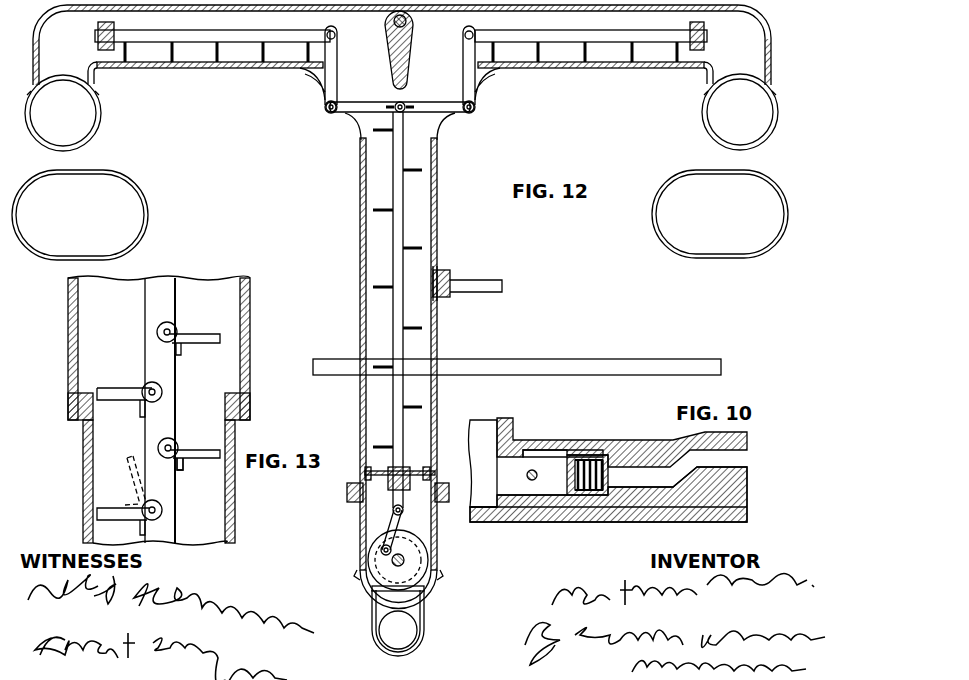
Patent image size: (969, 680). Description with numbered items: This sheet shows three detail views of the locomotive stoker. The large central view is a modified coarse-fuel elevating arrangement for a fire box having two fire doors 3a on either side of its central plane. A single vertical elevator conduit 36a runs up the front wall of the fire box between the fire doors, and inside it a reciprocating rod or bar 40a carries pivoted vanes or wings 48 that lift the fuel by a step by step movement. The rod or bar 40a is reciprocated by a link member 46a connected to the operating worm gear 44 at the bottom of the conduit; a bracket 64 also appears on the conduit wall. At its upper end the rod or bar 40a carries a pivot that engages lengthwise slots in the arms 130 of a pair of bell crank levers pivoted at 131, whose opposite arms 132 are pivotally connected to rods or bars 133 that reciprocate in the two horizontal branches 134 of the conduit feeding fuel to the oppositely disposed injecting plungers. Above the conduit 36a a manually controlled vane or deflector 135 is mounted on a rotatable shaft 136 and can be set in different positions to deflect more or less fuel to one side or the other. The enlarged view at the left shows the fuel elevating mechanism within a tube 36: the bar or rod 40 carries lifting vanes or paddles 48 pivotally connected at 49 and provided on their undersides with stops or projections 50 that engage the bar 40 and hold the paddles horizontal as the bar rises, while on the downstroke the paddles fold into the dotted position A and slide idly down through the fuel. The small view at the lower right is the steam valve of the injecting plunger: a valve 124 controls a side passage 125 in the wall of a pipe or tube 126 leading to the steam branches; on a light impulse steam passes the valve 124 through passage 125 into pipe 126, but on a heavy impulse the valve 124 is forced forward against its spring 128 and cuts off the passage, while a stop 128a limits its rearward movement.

In FIG. 12, the arms 130 is at (368, 104).
In FIG. 12, the pivot 131 is at (329, 114).
In FIG. 12, the opposite arms 132 is at (320, 72).
In FIG. 12, the rods or bars 133 is at (254, 44).
In FIG. 12, the horizontal branches 134 is at (203, 55).
In FIG. 12, the vane or deflector 135 is at (409, 58).
In FIG. 12, the rotatable shaft 136 is at (388, 34).
In FIG. 12, the lifting vanes or paddles 48 is at (416, 246).
In FIG. 13, the lifting vanes or paddles 48 is at (196, 340).
In FIG. 12, the reciprocating rod or bar 40a is at (398, 268).
In FIG. 12, the bracket 64 is at (488, 286).
In FIG. 12, the vertical elevator conduit 36a is at (437, 330).
In FIG. 12, the link member 46a is at (380, 546).
In FIG. 12, the worm gear 44 is at (410, 560).
In FIG. 12, the fire doors 3a is at (400, 215).
In FIG. 13, the tube 36 is at (250, 378).
In FIG. 13, the bars or rods 40 is at (166, 420).
In FIG. 13, the pivotal connection 49 is at (178, 448).
In FIG. 13, the stops or projections 50 is at (183, 465).
In FIG. 13, the folded position A is at (128, 478).
In FIG. 10, the side passage 125 is at (568, 452).
In FIG. 10, the pipe or tube 126 is at (642, 448).
In FIG. 10, the valve 124 is at (568, 486).
In FIG. 10, the spring 128 is at (585, 495).
In FIG. 10, the stop 128a is at (527, 474).